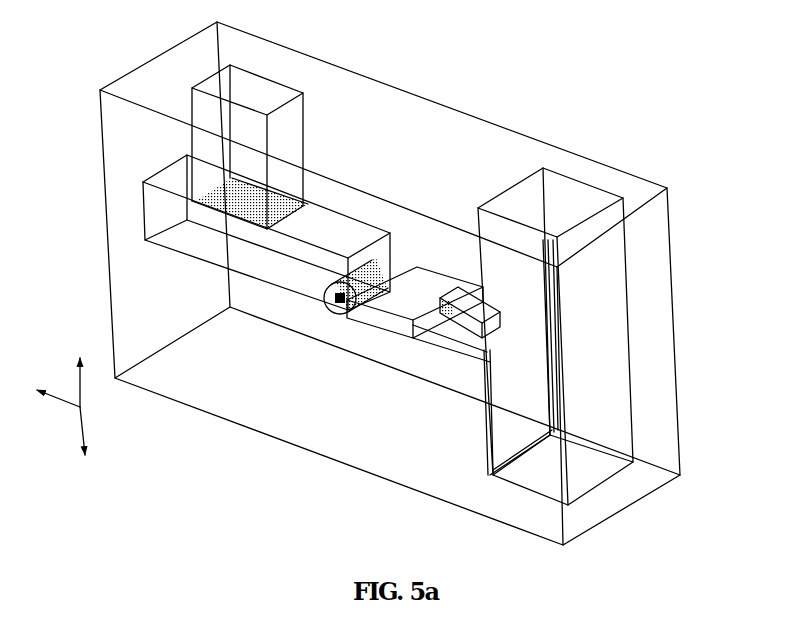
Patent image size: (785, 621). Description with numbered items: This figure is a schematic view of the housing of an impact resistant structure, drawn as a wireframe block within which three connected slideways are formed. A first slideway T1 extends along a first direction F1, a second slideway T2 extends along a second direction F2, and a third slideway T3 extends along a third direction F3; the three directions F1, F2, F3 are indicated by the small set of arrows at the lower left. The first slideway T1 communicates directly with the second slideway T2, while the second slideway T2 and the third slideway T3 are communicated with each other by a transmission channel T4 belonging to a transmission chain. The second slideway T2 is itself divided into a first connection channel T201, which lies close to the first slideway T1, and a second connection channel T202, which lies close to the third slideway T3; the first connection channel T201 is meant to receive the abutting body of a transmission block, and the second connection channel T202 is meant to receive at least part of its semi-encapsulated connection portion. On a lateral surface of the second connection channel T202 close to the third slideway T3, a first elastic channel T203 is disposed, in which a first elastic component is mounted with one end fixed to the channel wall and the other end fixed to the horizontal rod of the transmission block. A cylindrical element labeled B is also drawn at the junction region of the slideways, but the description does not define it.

The first slideway T1 is at (280, 132).
The second slideway T2 is at (443, 198).
The first connection channel T201 is at (350, 242).
The second connection channel T202 is at (420, 292).
The first elastic channel T203 is at (472, 305).
The third slideway T3 is at (610, 330).
The transmission channel T4 is at (517, 300).
The roller B is at (330, 303).
The first direction F1 is at (96, 382).
The second direction F2 is at (52, 406).
The third direction F3 is at (69, 432).